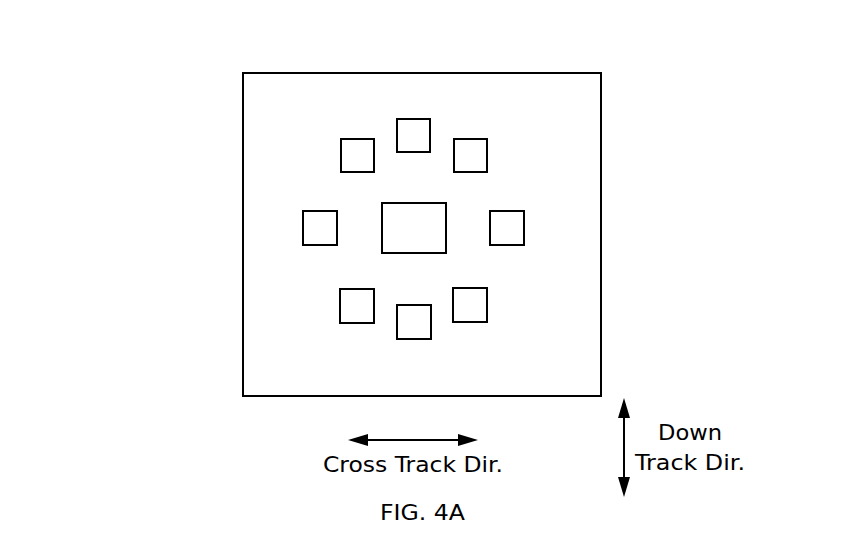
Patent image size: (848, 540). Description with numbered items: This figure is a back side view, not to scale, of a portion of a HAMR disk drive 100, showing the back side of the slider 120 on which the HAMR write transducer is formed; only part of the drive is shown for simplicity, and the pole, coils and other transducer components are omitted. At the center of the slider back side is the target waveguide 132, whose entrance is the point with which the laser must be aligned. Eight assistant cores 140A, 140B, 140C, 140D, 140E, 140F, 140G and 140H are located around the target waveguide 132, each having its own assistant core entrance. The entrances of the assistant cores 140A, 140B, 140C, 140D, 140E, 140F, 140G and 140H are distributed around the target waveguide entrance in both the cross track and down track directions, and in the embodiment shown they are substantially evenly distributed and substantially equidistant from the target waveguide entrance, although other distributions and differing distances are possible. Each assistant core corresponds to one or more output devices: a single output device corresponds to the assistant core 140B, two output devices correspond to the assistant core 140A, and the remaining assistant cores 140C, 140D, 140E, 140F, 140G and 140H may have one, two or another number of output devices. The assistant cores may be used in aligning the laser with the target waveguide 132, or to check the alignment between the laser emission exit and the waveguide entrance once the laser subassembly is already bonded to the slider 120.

The HAMR disk drive 100 is at (450, 36).
The slider 120 is at (577, 73).
The target waveguide 132 is at (412, 253).
The assistant core 140A is at (303, 235).
The assistant core 140B is at (524, 237).
The assistant core 140C is at (470, 322).
The assistant core 140D is at (421, 339).
The assistant core 140E is at (355, 323).
The assistant core 140F is at (341, 163).
The assistant core 140G is at (397, 121).
The assistant core 140H is at (487, 153).